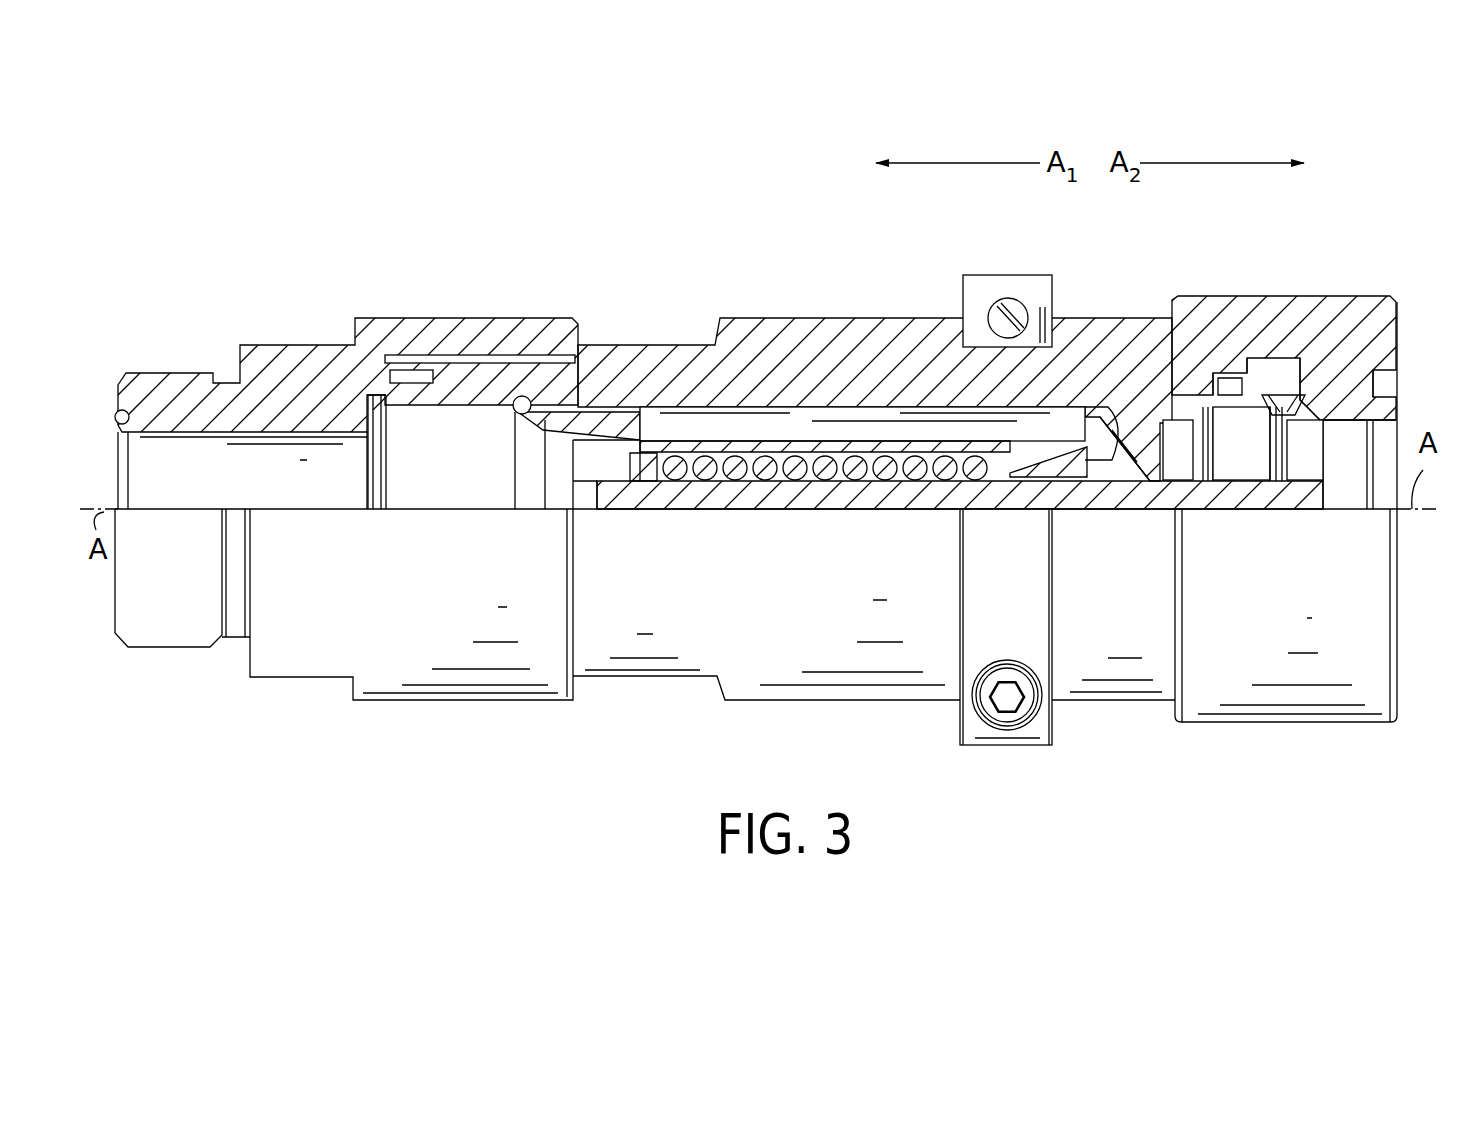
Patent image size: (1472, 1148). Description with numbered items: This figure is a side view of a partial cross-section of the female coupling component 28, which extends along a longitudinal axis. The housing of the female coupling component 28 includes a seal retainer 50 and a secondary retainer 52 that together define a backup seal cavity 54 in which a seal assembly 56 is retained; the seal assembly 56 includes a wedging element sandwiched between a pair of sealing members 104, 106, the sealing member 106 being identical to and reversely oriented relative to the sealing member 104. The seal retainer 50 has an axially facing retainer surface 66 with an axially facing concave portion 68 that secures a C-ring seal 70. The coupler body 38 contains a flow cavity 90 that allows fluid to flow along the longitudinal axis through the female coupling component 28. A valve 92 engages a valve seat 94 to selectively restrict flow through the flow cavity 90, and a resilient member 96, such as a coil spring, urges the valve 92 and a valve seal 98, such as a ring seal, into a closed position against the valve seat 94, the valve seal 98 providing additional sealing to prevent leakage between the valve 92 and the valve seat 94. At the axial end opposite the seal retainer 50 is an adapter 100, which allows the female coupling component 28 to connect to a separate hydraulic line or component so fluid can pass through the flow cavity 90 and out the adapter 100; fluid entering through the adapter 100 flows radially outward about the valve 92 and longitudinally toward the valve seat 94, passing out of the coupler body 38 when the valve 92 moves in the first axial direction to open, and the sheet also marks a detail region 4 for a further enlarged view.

The gap 4 is at (1222, 438).
The female coupling component 28 is at (1100, 742).
The coupler body 38 is at (912, 345).
The seal retainer 50 is at (1240, 398).
The secondary retainer 52 is at (1352, 372).
The backup seal cavity 54 is at (1305, 432).
The seal assembly 56 is at (1302, 385).
The retainer surface 66 is at (1214, 445).
The concave portion 68 is at (1213, 415).
The C-ring seal 70 is at (1195, 440).
The flow cavity 90 is at (757, 430).
The valve 92 is at (1165, 481).
The valve seat 94 is at (1103, 470).
The resilient member 96 is at (902, 480).
The valve seal 98 is at (1057, 460).
The adapter 100 is at (268, 340).
The sealing member 104 is at (1230, 478).
The sealing member 106 is at (1290, 426).